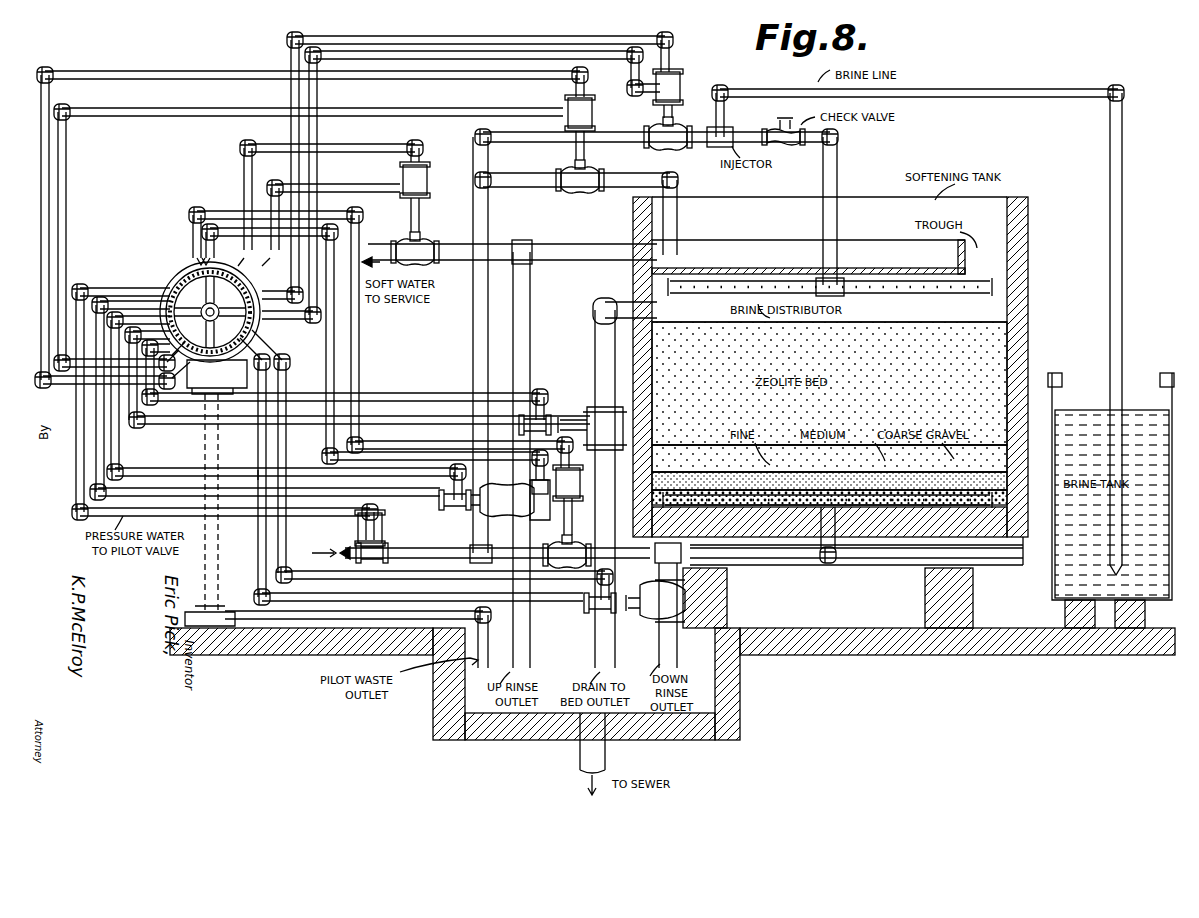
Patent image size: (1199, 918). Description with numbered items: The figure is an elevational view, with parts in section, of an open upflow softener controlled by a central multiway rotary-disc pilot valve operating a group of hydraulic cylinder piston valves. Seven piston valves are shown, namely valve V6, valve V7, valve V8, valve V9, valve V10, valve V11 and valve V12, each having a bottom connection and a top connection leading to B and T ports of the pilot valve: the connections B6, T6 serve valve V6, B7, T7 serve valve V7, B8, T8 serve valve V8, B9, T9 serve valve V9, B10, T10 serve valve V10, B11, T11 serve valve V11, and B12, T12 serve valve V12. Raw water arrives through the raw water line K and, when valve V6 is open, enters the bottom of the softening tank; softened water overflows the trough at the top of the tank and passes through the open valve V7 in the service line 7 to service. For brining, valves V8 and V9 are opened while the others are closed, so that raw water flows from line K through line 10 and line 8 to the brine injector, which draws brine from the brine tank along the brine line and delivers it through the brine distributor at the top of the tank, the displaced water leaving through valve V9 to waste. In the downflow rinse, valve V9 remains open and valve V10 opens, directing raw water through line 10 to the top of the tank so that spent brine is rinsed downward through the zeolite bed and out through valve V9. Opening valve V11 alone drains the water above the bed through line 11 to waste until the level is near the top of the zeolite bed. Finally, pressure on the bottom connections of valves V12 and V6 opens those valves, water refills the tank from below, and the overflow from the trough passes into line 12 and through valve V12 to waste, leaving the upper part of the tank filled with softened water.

The top port connection of valve V8 T8 is at (473, 38).
The bottom port connection of valve V8 B8 is at (568, 52).
The top port connection of valve V10 T10 is at (165, 74).
The bottom port connection of valve V10 B10 is at (165, 111).
The top port connection of valve V7 T7 is at (320, 149).
The bottom port connection of valve V7 B7 is at (325, 188).
The piston valve V8 is at (652, 138).
The line 8 is at (538, 136).
The piston valve V10 is at (583, 196).
The line 7 is at (454, 254).
The piston valve V7 is at (415, 231).
The line 10 is at (472, 323).
The line 12 is at (528, 332).
The line 11 is at (595, 370).
The bottom port connection of valve V6 B6 is at (328, 326).
The top port connection of valve V6 T6 is at (358, 326).
The bottom port connection of valve V11 B11 is at (386, 402).
The top port connection of valve V11 T11 is at (396, 430).
The piston valve V11 is at (592, 428).
The bottom port connection of valve V12 B12 is at (158, 482).
The top port connection of valve V9 T9 is at (260, 470).
The bottom port connection of valve V9 B9 is at (330, 454).
The top port connection of valve V12 T12 is at (138, 516).
The piston valve V12 is at (494, 500).
The raw water line K is at (456, 556).
The piston valve V6 is at (567, 502).
The piston valve V9 is at (655, 605).